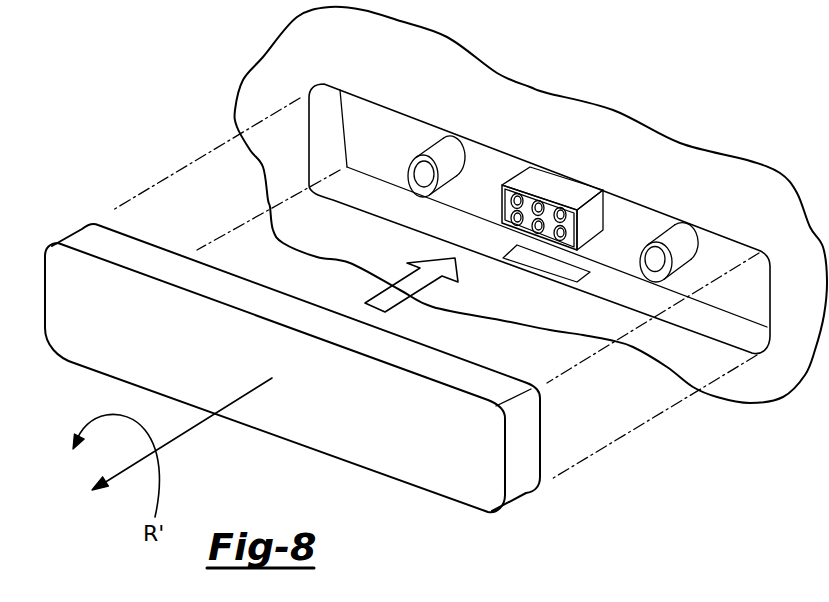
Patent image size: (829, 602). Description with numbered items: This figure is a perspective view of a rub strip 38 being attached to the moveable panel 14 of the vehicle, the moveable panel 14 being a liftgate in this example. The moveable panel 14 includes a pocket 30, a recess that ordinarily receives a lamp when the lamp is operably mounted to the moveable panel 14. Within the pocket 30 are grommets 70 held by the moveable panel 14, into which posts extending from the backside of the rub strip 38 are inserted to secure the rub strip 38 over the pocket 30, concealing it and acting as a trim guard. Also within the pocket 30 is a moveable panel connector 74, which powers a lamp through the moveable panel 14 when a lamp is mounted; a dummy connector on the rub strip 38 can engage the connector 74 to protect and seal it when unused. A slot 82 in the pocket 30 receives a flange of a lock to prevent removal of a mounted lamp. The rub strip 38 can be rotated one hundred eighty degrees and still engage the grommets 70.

The moveable panel 14 is at (673, 163).
The pocket 30 is at (707, 236).
The rub strip 38 is at (447, 467).
The grommets 70 is at (410, 168).
The moveable panel connector 74 is at (540, 185).
The slot 82 is at (548, 276).